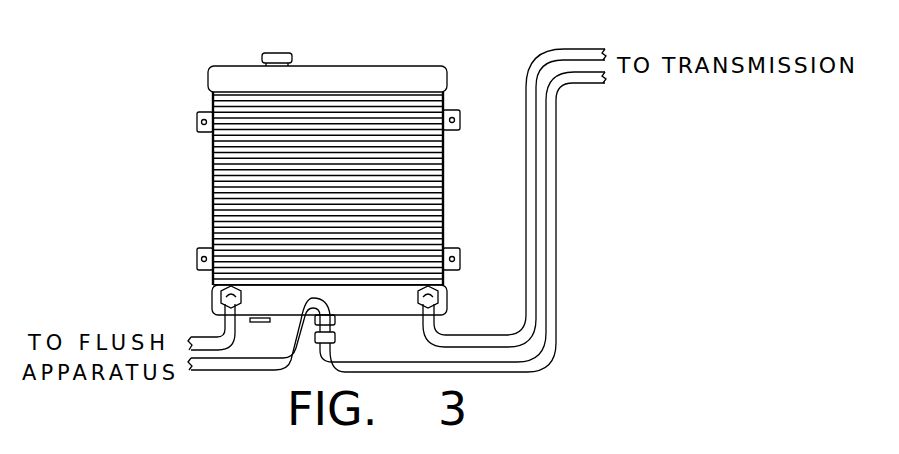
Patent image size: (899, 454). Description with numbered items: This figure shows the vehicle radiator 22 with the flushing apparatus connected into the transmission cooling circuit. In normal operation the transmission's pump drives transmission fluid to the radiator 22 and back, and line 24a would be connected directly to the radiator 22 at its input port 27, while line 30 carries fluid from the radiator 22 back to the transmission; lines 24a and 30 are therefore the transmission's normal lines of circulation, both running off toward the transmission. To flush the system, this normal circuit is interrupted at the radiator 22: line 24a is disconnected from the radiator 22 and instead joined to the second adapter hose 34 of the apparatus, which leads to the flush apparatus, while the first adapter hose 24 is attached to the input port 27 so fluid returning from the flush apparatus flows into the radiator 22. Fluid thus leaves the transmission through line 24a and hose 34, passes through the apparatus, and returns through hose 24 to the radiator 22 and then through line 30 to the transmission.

The radiator 22 is at (312, 66).
The first adapter hose 24 is at (209, 338).
The phantom line 24a is at (557, 225).
The input port 27 is at (220, 299).
The line 30 is at (550, 48).
The second adapter hose 34 is at (213, 372).